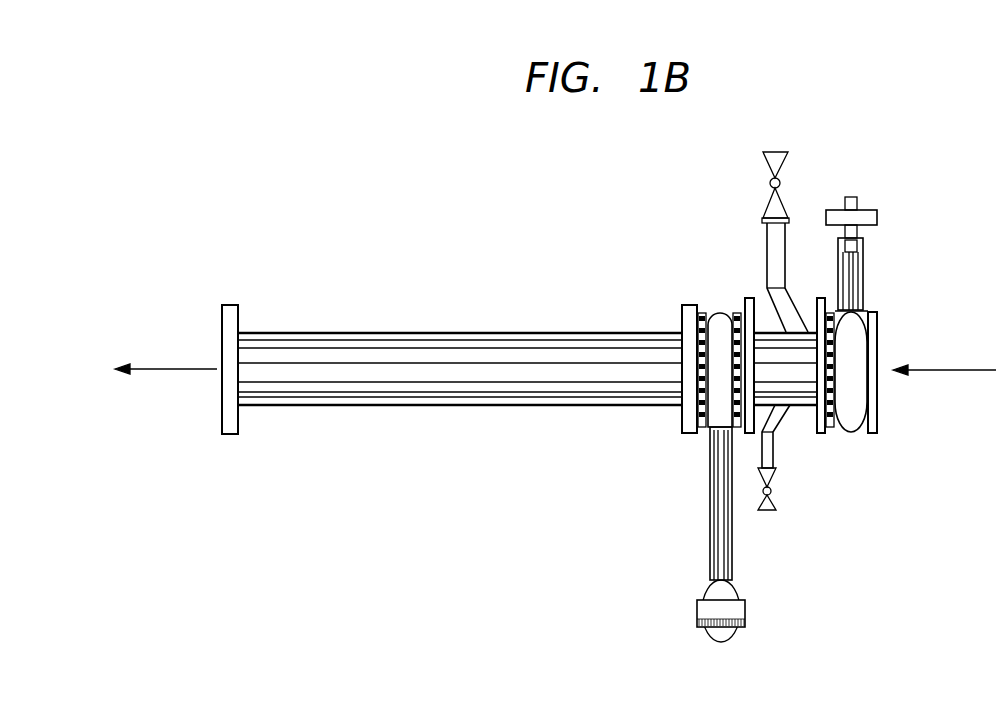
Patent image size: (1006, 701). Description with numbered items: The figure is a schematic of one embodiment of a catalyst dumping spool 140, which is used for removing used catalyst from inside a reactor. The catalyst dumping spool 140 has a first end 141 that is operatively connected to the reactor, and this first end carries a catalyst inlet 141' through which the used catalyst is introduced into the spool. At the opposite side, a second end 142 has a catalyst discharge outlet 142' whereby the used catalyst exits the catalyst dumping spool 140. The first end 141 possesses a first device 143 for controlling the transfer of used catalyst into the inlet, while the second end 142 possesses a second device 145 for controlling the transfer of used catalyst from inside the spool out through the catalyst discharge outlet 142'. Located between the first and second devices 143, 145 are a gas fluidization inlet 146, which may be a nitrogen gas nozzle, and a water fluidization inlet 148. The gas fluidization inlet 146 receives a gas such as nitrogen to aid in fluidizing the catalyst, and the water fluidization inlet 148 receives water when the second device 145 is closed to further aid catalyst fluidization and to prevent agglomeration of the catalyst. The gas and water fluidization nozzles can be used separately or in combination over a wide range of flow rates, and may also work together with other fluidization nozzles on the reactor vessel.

The catalyst dumping spool 140 is at (428, 222).
The first end 141 is at (887, 365).
The catalyst inlet 141' is at (944, 398).
The second end 142 is at (519, 347).
The catalyst discharge outlet 142' is at (166, 341).
The first device 143 is at (866, 283).
The second device 145 is at (703, 437).
The gas fluidization inlet 146 is at (777, 430).
The water fluidization inlet 148 is at (765, 268).